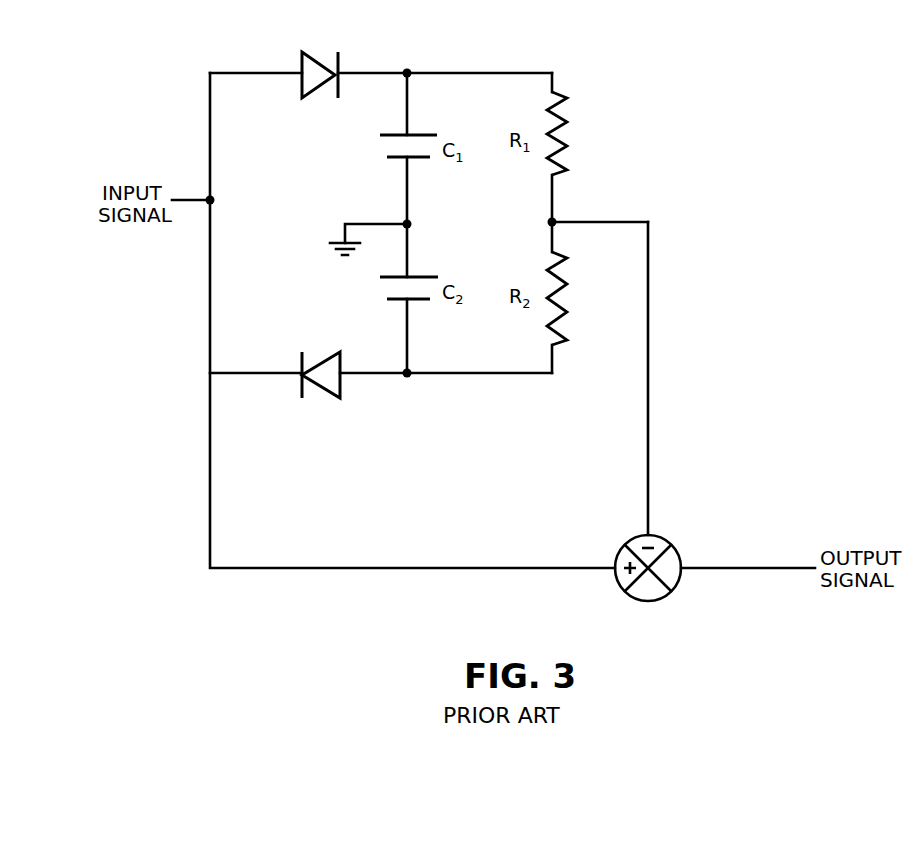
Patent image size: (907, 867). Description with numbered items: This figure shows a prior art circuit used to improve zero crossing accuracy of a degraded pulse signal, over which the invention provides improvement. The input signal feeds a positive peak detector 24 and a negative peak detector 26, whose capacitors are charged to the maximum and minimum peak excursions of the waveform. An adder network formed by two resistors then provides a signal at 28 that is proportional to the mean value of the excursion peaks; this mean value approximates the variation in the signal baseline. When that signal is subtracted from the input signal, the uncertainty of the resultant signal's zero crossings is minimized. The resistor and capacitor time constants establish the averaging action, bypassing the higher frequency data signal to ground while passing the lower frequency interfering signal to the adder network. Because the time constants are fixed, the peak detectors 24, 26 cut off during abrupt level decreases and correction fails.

The positive peak detector 24 is at (500, 73).
The negative peak detector 26 is at (462, 373).
The mean value signal point 28 is at (622, 222).